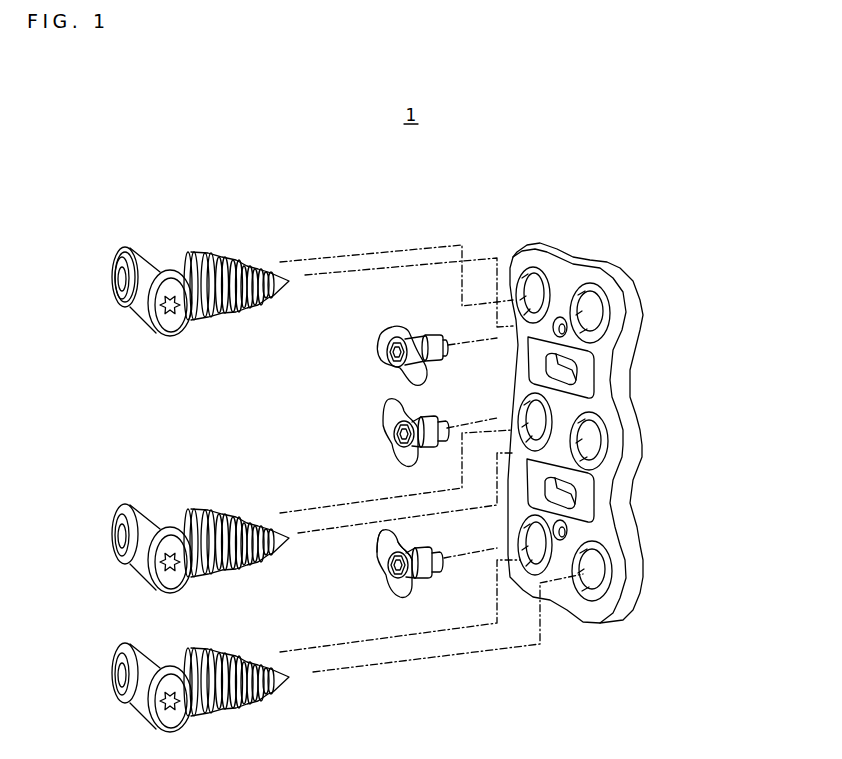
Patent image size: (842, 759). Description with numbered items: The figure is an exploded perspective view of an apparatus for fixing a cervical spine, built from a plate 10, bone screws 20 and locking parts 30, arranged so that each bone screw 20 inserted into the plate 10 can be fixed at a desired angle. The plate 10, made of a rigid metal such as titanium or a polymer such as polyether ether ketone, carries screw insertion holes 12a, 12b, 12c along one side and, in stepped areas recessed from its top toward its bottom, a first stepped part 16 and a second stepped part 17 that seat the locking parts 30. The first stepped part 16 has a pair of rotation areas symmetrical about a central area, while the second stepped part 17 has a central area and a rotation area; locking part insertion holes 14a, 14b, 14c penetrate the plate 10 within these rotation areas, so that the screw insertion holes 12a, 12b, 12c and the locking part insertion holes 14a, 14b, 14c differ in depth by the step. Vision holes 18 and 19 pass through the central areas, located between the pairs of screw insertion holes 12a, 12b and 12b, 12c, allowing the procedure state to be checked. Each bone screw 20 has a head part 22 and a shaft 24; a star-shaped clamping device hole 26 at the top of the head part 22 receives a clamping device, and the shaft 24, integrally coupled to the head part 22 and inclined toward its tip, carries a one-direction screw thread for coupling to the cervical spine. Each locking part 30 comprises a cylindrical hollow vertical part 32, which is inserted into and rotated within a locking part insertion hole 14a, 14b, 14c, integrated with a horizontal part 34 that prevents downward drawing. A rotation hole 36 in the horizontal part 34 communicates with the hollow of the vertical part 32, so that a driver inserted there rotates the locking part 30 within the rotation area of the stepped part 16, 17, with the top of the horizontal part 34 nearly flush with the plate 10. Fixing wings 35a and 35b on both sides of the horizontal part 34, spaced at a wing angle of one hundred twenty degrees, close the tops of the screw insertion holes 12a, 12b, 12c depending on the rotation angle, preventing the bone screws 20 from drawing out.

The plate 10 is at (597, 627).
The screw insertion hole 12a is at (622, 312).
The screw insertion hole 12b is at (622, 446).
The screw insertion hole 12c is at (622, 576).
The locking part insertion hole 14a is at (622, 344).
The locking part insertion hole 14b is at (622, 417).
The locking part insertion hole 14c is at (622, 545).
The first stepped part 16 is at (634, 401).
The second stepped part 17 is at (634, 523).
The vision hole 18 is at (626, 375).
The vision hole 19 is at (622, 482).
The bone screw 20 is at (176, 334).
The head part 22 is at (181, 332).
The shaft 24 is at (253, 310).
The clamping device hole 26 is at (142, 309).
The locking part 30 is at (386, 625).
The vertical part 32 is at (433, 578).
The horizontal part 34 is at (394, 592).
The fixing wing 35a is at (421, 546).
The fixing wing 35b is at (380, 543).
The rotation hole 36 is at (384, 573).